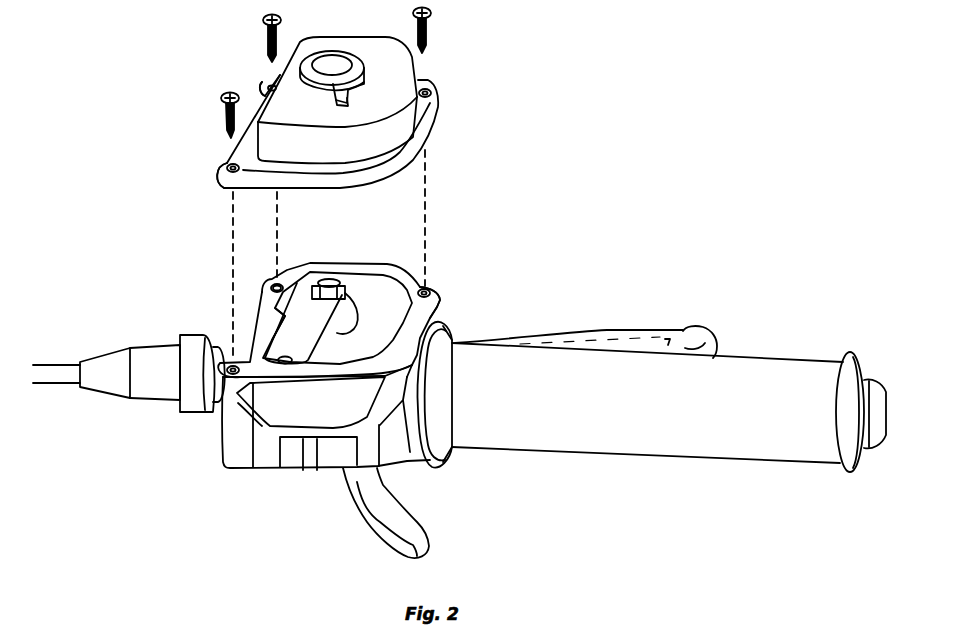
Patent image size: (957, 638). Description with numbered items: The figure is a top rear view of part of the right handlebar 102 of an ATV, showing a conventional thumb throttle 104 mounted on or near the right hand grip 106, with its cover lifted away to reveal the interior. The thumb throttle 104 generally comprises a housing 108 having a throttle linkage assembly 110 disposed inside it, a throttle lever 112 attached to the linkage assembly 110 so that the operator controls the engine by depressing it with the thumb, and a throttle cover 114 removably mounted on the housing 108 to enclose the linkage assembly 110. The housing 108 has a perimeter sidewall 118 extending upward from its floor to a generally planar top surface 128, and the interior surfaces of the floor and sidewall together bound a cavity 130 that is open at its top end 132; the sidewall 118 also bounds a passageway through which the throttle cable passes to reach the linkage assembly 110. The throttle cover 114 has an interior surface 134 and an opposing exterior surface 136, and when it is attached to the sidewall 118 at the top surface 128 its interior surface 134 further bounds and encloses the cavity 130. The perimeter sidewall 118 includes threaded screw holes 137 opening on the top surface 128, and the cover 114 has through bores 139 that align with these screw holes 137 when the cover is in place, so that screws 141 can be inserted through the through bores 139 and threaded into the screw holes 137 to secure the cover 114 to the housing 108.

The right handlebar 102 is at (440, 452).
The thumb throttle 104 is at (680, 99).
The right hand grip 106 is at (763, 360).
The housing 108 is at (445, 295).
The throttle linkage assembly 110 is at (283, 350).
The throttle lever 112 is at (430, 527).
The throttle cover 114 is at (400, 57).
The perimeter sidewall 118 is at (438, 312).
The top surface 128 is at (263, 323).
The cavity 130 is at (378, 312).
The top end 132 is at (393, 265).
The interior surface 134 is at (398, 178).
The exterior surface 136 is at (266, 86).
The threaded screw holes 137 is at (268, 286).
The through bores 139 is at (224, 165).
The screws 141 is at (224, 118).